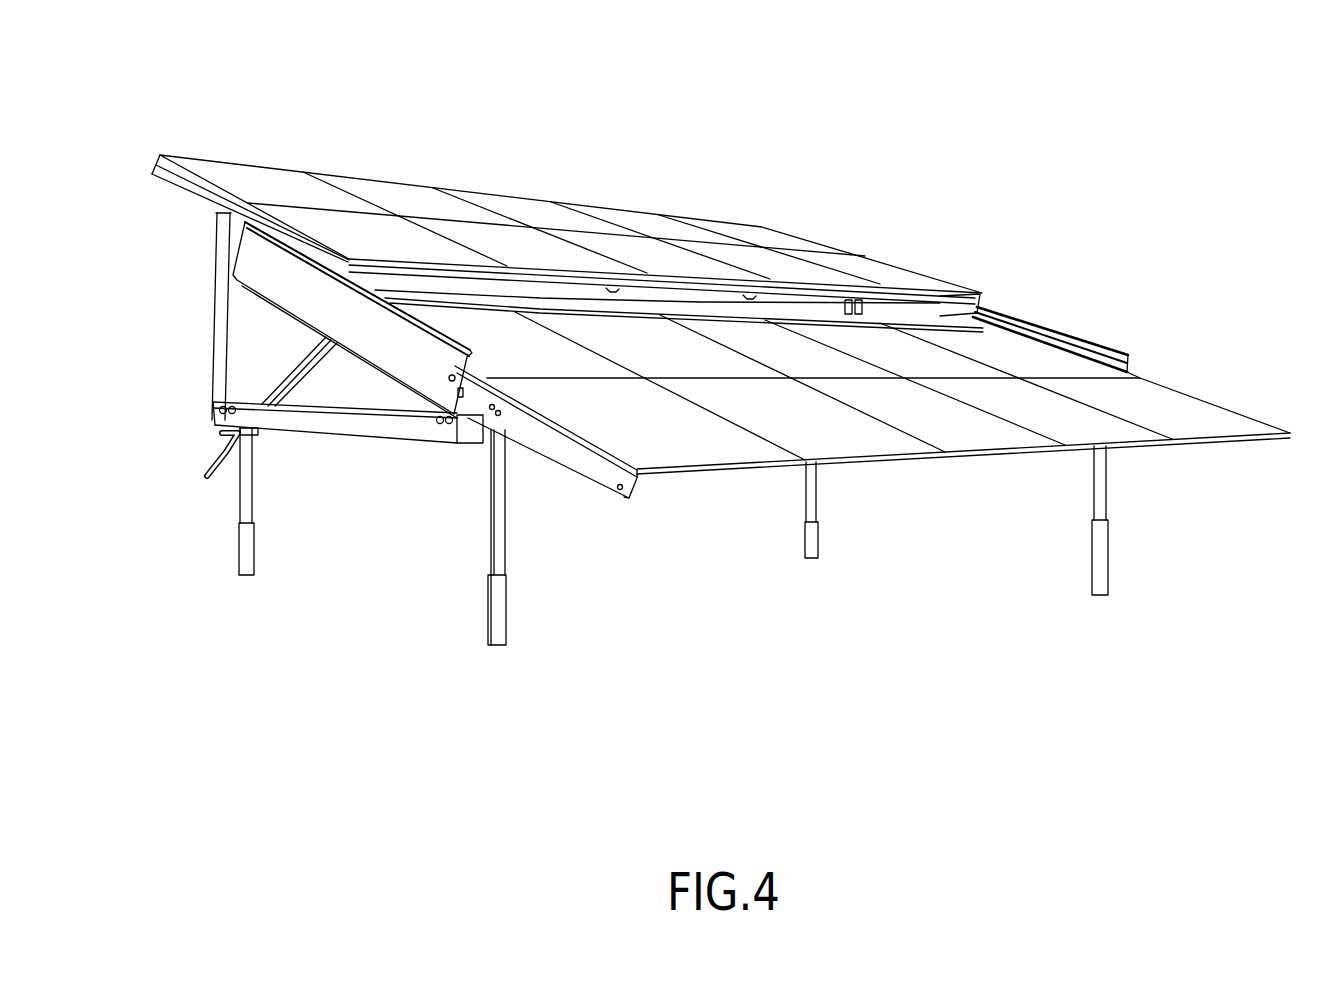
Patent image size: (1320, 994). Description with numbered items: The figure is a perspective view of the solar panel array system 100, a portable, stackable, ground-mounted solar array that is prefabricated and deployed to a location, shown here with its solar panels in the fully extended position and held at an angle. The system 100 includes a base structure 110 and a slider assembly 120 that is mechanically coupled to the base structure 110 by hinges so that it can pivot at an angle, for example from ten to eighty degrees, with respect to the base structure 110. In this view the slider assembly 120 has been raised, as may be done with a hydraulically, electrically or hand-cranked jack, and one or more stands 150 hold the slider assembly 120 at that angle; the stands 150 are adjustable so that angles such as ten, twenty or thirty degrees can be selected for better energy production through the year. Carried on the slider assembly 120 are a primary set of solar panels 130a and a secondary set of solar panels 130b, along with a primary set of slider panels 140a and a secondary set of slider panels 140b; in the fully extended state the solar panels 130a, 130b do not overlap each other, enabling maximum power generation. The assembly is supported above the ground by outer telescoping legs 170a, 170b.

The solar panel array system 100 is at (316, 72).
The base structure 110 is at (333, 422).
The slider assembly 120 is at (422, 372).
The primary set of solar panels 130a is at (370, 190).
The secondary set of solar panels 130b is at (1178, 402).
The primary set of slider panels 140a is at (177, 181).
The secondary set of slider panels 140b is at (597, 474).
The stand 150 is at (293, 368).
The outer telescoping leg 170a is at (242, 540).
The outer telescoping leg 170b is at (494, 625).